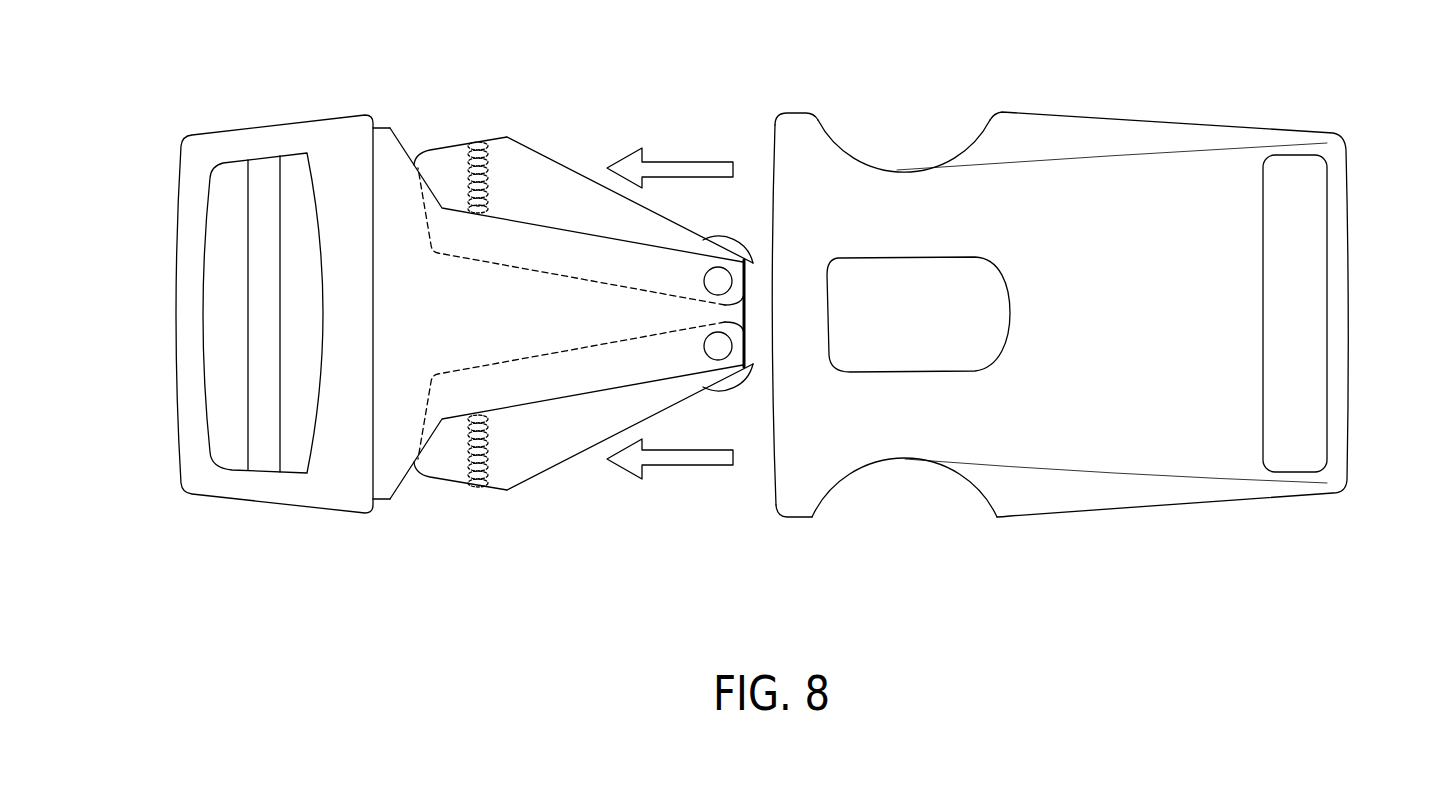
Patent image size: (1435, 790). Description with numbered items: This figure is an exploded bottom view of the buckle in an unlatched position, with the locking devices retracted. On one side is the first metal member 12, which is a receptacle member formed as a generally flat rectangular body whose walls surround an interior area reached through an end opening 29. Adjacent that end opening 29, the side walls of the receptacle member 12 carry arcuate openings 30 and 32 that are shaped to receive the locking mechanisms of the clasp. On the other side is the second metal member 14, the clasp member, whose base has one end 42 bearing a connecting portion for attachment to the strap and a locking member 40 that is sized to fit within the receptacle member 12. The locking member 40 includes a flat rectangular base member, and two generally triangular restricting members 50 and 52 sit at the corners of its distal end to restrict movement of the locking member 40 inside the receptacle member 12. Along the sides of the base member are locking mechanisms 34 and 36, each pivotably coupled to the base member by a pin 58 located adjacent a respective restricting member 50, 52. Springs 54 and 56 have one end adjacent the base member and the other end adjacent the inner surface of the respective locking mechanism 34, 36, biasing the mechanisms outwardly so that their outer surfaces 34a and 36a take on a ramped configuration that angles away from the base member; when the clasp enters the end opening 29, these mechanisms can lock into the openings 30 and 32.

The first metal member 12 is at (1142, 112).
The second metal member 14 is at (345, 113).
The end opening 29 is at (773, 487).
The opening 30 is at (897, 170).
The opening 32 is at (913, 460).
The locking mechanism 34 is at (497, 137).
The outer surface 34a is at (565, 167).
The locking mechanism 36 is at (505, 493).
The outer surface 36a is at (553, 457).
The locking member 40 is at (262, 315).
The end of the base 42 is at (242, 124).
The restricting member 50 is at (737, 237).
The restricting member 52 is at (733, 392).
The spring 54 is at (467, 465).
The spring 56 is at (468, 172).
The pin 58 is at (718, 281).